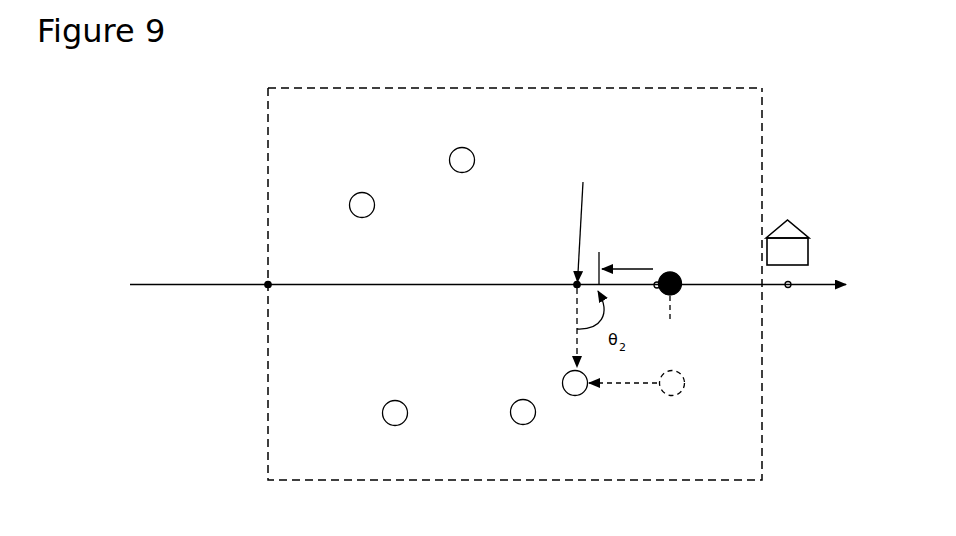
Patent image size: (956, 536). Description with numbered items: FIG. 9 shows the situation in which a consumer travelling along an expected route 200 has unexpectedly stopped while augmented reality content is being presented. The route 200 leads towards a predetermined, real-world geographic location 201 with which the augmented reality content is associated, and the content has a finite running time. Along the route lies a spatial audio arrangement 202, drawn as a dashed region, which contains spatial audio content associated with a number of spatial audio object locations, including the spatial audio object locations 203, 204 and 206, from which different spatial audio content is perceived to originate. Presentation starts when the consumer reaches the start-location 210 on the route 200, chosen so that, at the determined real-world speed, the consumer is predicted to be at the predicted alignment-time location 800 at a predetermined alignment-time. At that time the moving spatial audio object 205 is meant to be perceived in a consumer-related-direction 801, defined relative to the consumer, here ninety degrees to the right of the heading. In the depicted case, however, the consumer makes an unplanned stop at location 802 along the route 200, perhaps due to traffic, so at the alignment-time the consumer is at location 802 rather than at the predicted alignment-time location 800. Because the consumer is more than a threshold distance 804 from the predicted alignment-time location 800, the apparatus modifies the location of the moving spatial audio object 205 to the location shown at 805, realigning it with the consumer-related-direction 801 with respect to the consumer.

The route 200 is at (173, 288).
The predetermined, real-world geographic location 201 is at (383, 415).
The spatial audio arrangement 202 is at (346, 87).
The spatial audio object location 203 is at (350, 204).
The spatial audio object location 204 is at (471, 151).
The spatial audio object 205 is at (673, 396).
The spatial audio object location 206 is at (518, 423).
The start-location 210 is at (266, 282).
The predicted alignment-time location 800 is at (662, 270).
The consumer-related-direction 801 is at (575, 318).
The location of unplanned stop 802 is at (515, 86).
The threshold distance 804 is at (628, 268).
The modified spatial audio object location 805 is at (576, 396).